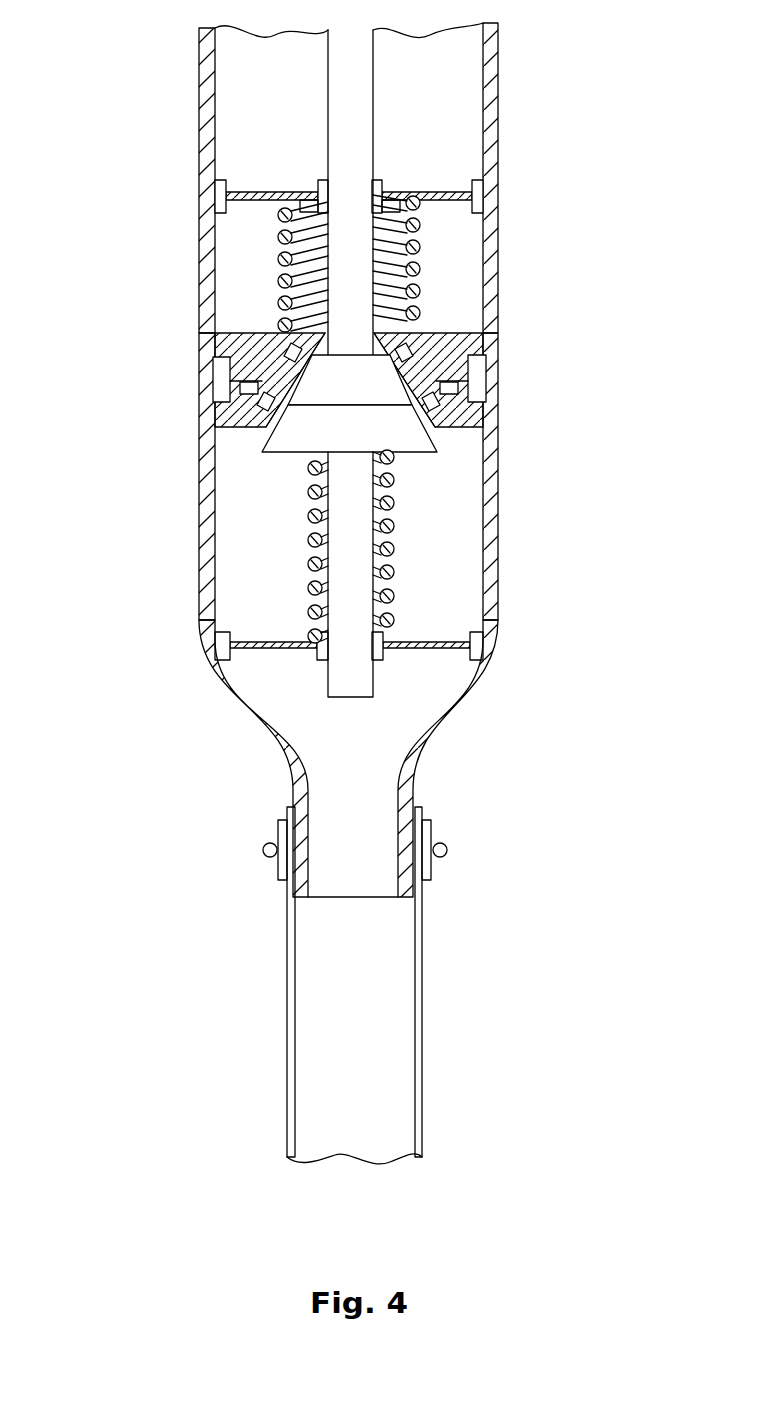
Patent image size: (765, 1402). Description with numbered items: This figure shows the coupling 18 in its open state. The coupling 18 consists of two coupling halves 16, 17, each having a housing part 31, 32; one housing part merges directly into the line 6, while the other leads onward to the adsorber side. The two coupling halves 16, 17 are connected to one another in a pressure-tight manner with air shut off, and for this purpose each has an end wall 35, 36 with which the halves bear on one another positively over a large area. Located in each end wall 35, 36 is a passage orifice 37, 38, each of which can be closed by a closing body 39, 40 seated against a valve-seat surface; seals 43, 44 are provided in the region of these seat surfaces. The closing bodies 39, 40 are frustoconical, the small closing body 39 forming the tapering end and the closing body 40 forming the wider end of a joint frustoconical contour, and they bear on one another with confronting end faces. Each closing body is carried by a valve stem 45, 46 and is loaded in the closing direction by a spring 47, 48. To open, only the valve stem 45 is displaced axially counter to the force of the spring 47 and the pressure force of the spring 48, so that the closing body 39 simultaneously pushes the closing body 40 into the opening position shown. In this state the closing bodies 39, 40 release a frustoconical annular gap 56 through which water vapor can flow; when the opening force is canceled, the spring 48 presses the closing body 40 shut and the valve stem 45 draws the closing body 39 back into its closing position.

The line 6 is at (290, 1067).
The coupling half 16 is at (426, 754).
The coupling half 17 is at (499, 119).
The coupling 18 is at (136, 109).
The housing part 31 is at (210, 244).
The housing part 32 is at (210, 582).
The end wall 35 is at (455, 345).
The end wall 36 is at (490, 455).
The passage orifice 37 is at (393, 340).
The passage orifice 38 is at (440, 404).
The closing body 39 is at (298, 434).
The closing body 40 is at (318, 394).
The seal 43 is at (288, 350).
The seal 44 is at (250, 393).
The valve stem 45 is at (358, 62).
The valve stem 46 is at (340, 682).
The spring 47 is at (412, 243).
The spring 48 is at (392, 546).
The frustoconical annular gap 56 is at (482, 378).